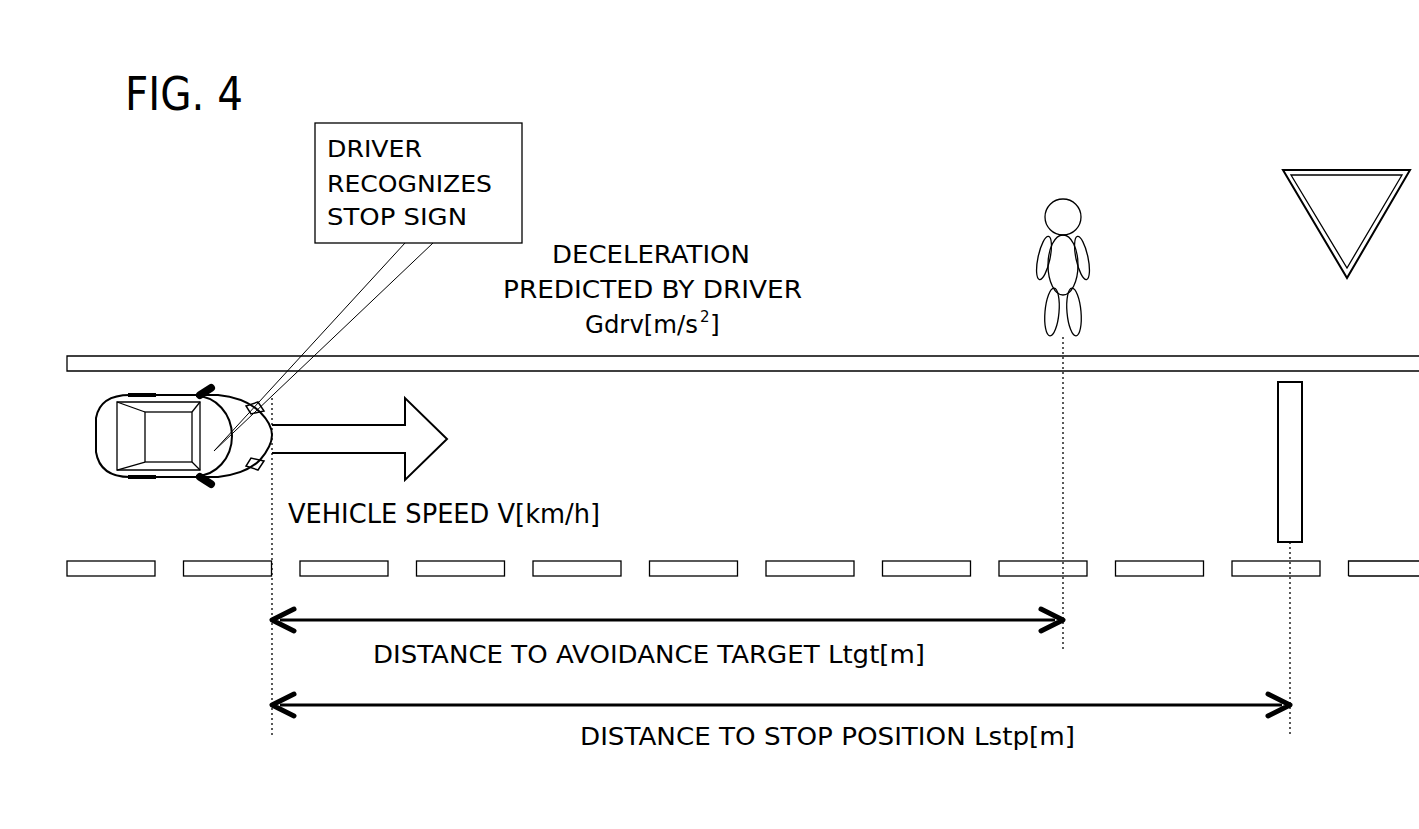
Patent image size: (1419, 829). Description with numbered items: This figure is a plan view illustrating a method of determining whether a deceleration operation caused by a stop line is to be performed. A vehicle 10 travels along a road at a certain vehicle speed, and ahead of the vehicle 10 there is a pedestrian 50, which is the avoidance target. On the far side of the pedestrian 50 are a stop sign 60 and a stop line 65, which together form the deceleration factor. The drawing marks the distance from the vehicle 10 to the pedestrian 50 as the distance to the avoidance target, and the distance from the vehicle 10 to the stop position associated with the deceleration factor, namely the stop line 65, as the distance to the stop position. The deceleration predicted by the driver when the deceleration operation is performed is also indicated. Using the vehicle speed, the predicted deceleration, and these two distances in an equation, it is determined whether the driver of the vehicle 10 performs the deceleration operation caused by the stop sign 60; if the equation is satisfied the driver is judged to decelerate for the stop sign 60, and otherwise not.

The vehicle 10 is at (176, 393).
The pedestrian 50 is at (1067, 199).
The stop sign 60 is at (1356, 170).
The stop line 65 is at (1302, 423).